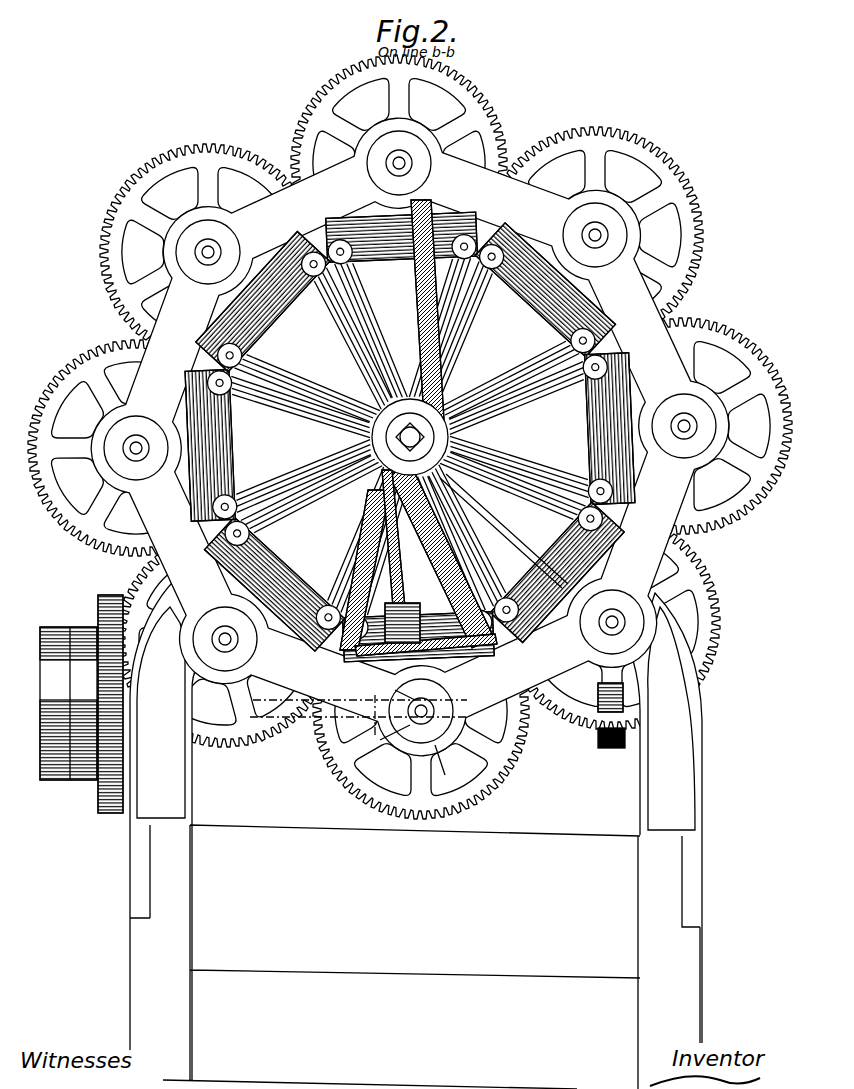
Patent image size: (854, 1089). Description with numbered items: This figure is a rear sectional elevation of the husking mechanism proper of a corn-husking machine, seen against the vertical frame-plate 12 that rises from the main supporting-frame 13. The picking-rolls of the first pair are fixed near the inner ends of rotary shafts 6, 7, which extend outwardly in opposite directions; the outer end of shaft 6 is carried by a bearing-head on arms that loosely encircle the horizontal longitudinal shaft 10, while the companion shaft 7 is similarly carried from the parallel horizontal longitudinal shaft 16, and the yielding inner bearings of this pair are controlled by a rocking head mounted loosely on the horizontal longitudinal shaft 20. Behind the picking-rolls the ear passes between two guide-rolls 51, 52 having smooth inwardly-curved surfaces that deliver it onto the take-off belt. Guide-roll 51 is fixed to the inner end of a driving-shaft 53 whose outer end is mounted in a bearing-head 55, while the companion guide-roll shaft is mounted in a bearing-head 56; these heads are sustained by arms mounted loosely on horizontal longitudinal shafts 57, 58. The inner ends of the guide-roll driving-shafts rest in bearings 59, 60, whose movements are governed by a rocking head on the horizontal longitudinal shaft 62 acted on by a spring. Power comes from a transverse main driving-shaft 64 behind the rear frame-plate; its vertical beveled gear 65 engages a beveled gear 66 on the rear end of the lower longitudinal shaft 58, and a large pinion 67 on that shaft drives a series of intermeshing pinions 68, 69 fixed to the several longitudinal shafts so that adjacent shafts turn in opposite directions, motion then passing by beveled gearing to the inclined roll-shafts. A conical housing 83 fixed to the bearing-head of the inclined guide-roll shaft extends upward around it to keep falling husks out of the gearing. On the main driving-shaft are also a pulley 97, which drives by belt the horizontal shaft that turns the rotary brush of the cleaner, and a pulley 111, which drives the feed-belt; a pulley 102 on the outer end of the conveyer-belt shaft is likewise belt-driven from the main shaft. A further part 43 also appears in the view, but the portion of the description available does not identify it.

The horizontal longitudinal shaft 57 is at (400, 163).
The bearing-head 56 is at (427, 213).
The horizontal longitudinal shaft 16 is at (209, 252).
The horizontal longitudinal shaft 20 is at (594, 235).
The vertical frame-plate 12 is at (410, 437).
The rotary shaft 7 is at (320, 366).
The bearing 59 is at (380, 398).
The horizontal longitudinal shaft 62 is at (137, 447).
The guide-roll 51 is at (335, 440).
The guide-roll 52 is at (480, 433).
The rotary shaft 6 is at (520, 526).
The bearing 60 is at (452, 498).
The conical housing 83 is at (445, 566).
The bearing-head 55 is at (423, 645).
The driving-shaft 53 is at (400, 578).
The lower-left gear shaft 43 is at (230, 640).
The horizontal longitudinal shaft 10 is at (607, 622).
The lower horizontal longitudinal shaft 58 is at (438, 707).
The main driving-shaft 64 is at (228, 720).
The vertical beveled gear 65 is at (377, 747).
The beveled gear 66 is at (457, 758).
The large pinion 67 is at (497, 777).
The pinion 68 is at (711, 621).
The pinion 69 is at (746, 508).
The pulley 111 is at (605, 748).
The main supporting-frame 13 is at (580, 833).
The pulley 97 is at (105, 813).
The pulley 102 is at (80, 780).